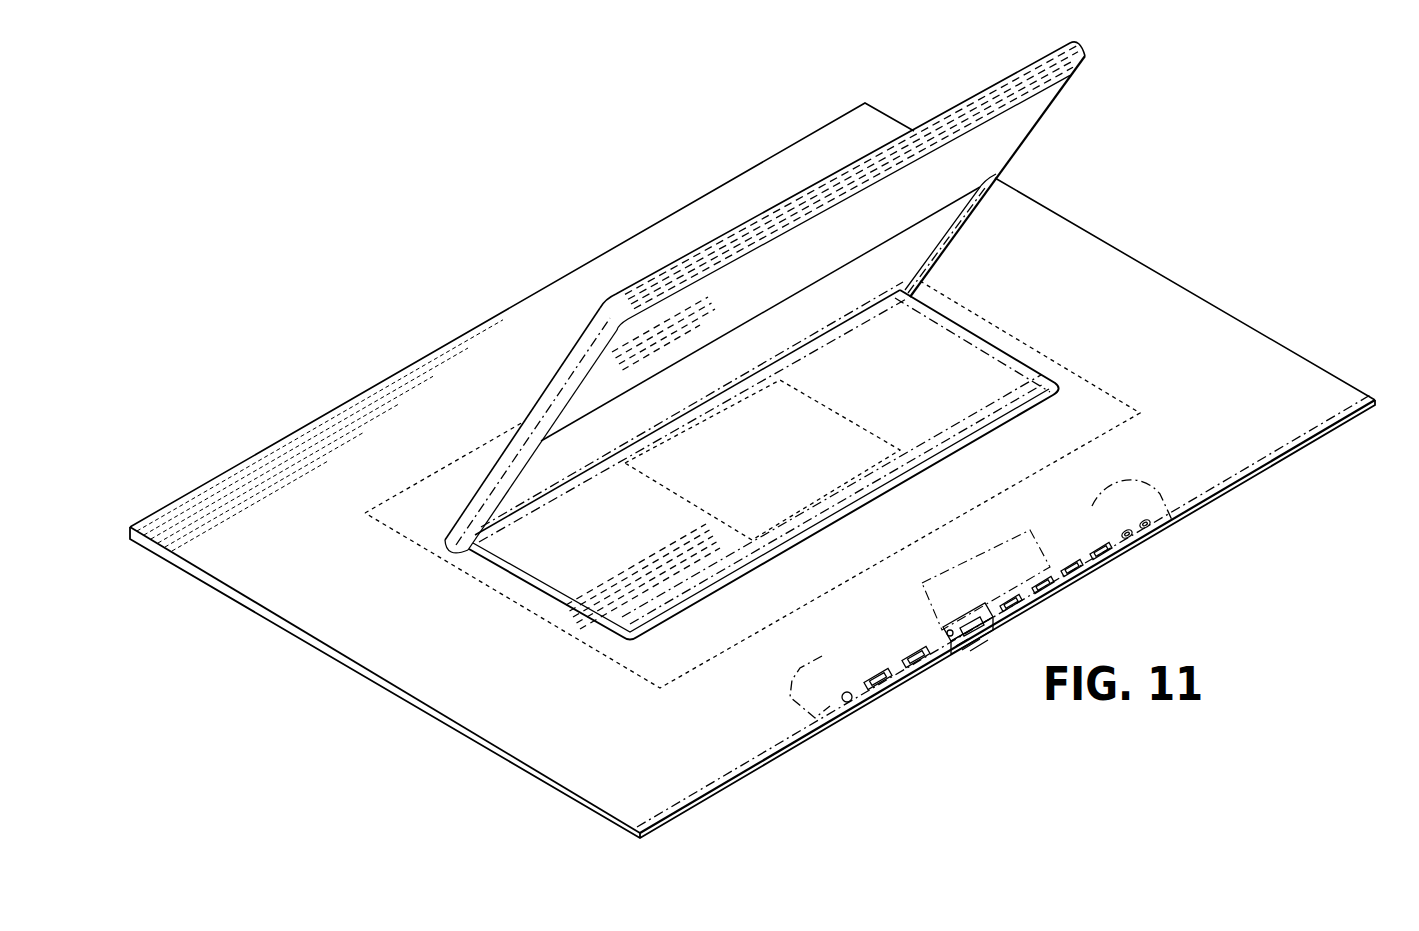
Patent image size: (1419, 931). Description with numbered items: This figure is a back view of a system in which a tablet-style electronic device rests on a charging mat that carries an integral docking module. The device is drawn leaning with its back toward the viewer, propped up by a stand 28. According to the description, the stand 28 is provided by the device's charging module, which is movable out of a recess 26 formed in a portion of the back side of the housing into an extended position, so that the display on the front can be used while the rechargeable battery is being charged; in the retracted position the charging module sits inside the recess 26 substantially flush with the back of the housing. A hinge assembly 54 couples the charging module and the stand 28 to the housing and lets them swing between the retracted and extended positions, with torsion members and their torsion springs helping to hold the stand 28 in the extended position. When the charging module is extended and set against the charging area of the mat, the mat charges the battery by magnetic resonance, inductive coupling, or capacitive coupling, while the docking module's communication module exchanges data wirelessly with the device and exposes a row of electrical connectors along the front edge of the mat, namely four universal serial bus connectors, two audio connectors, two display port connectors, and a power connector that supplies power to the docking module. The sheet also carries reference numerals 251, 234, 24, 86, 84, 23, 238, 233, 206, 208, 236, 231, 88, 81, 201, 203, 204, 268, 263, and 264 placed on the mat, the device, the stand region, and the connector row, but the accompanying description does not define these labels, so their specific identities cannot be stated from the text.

The computing device 251 is at (478, 166).
The base 234 is at (455, 326).
The display 24 is at (758, 204).
The stand 28 is at (945, 118).
The recess 26 is at (997, 163).
The hinge assembly 54 is at (669, 307).
The support arm 86 is at (920, 238).
The hidden component region 84 is at (1018, 340).
The kickstand 23 is at (545, 390).
The hidden outline 238 is at (1100, 380).
The port cluster 233 is at (1152, 478).
The audio port 206 is at (1127, 527).
The USB port 208 is at (1070, 560).
The connector board 236 is at (958, 600).
The connector 231 is at (1010, 597).
The recess 88 is at (693, 507).
The platform 81 is at (843, 523).
The port 201 is at (1150, 537).
The port 203 is at (1110, 557).
The port 204 is at (1045, 588).
The port 268 is at (917, 647).
The button 263 is at (847, 692).
The port 264 is at (887, 690).